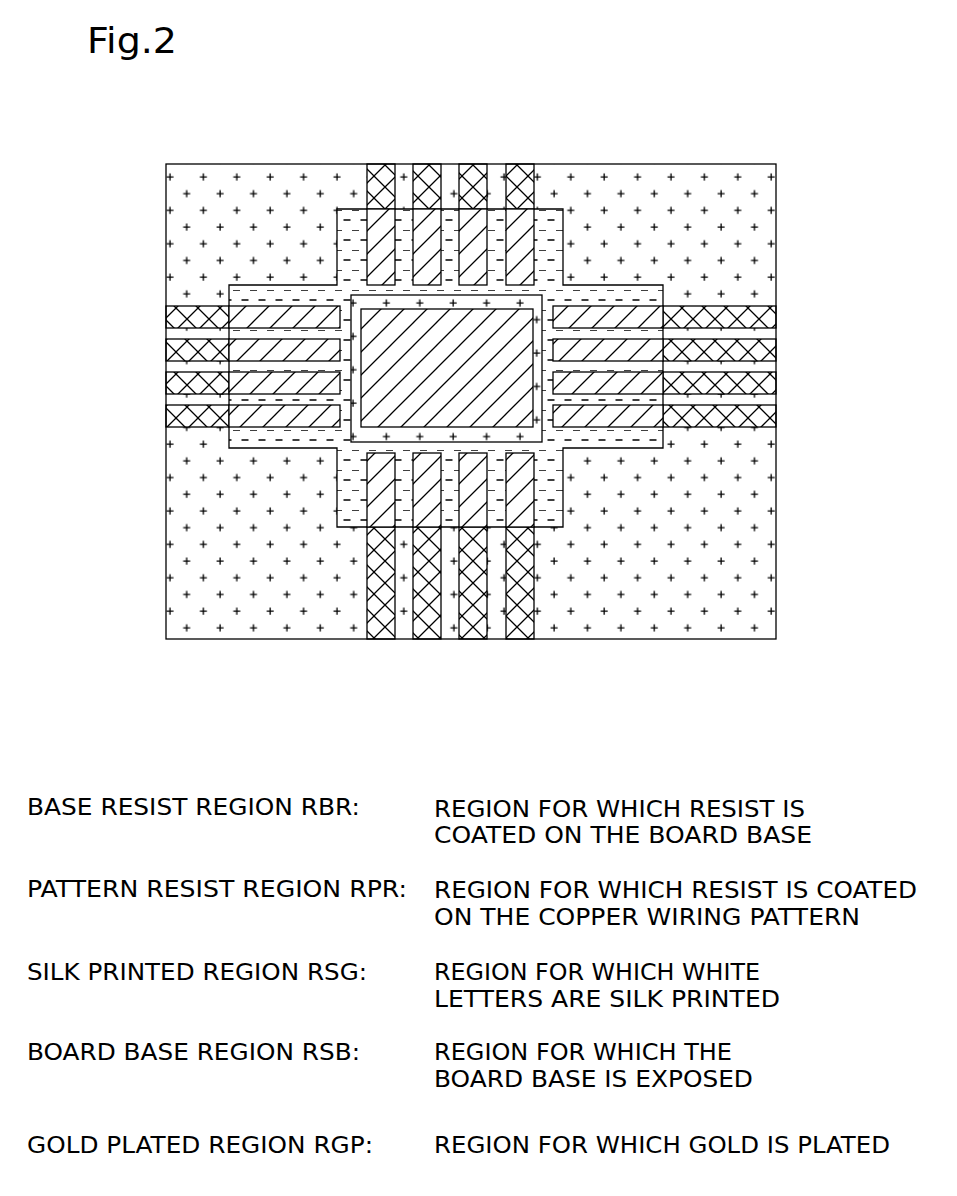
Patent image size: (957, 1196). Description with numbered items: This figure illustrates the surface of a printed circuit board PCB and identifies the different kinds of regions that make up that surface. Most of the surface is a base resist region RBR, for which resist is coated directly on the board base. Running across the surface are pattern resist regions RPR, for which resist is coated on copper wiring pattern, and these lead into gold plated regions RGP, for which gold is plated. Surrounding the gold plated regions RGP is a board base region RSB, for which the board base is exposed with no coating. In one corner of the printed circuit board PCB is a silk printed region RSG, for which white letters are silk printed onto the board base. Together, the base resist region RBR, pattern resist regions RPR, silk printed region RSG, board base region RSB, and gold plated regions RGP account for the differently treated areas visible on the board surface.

The base resist region RBR is at (612, 199).
The printed circuit board PCB is at (724, 165).
The pattern resist region RPR is at (471, 440).
The gold plated region RGP is at (446, 459).
The board base region RSB is at (573, 438).
The silk printed region RSG is at (663, 573).